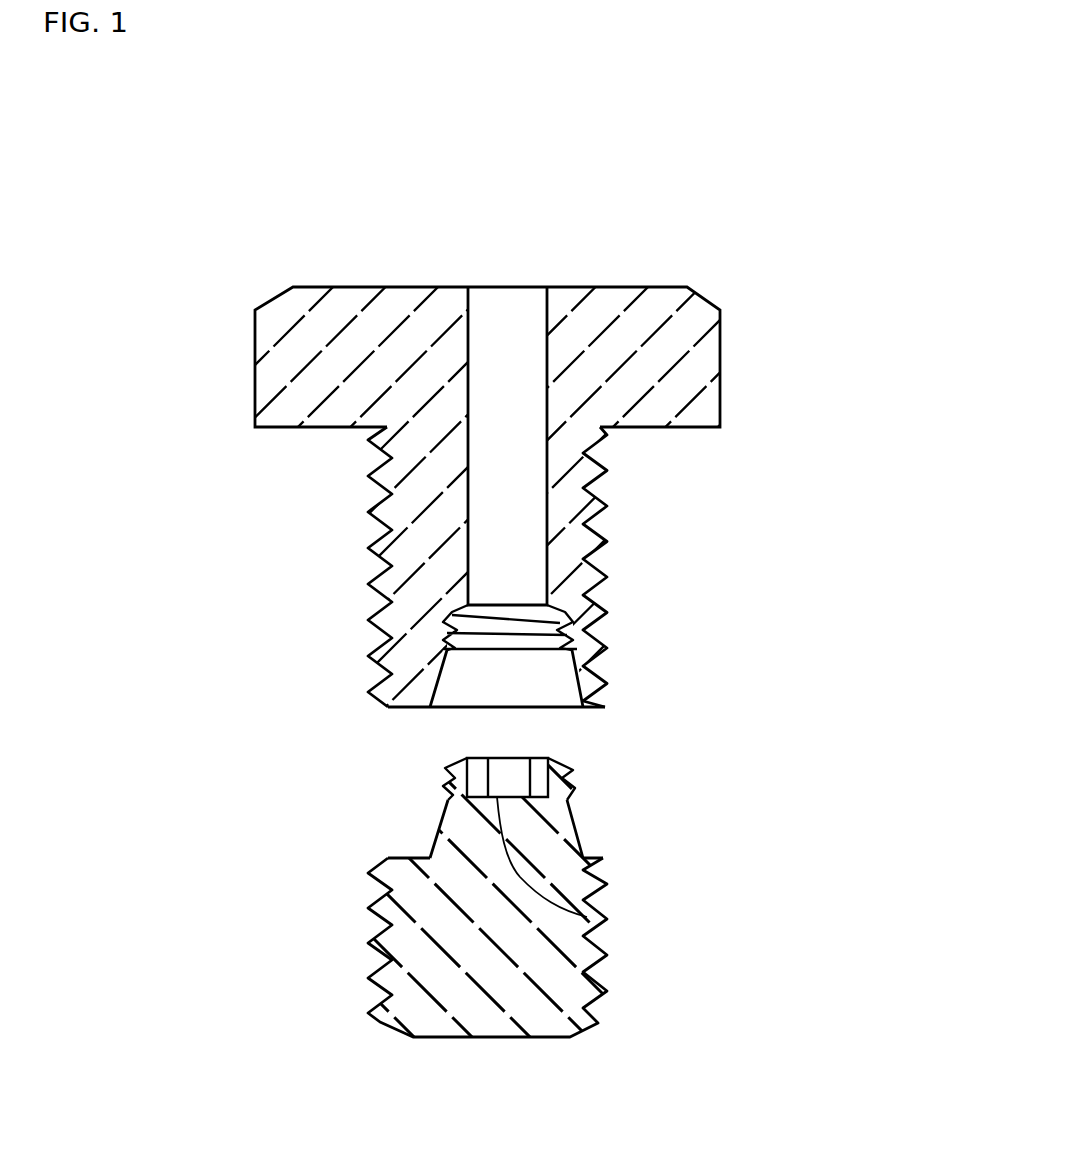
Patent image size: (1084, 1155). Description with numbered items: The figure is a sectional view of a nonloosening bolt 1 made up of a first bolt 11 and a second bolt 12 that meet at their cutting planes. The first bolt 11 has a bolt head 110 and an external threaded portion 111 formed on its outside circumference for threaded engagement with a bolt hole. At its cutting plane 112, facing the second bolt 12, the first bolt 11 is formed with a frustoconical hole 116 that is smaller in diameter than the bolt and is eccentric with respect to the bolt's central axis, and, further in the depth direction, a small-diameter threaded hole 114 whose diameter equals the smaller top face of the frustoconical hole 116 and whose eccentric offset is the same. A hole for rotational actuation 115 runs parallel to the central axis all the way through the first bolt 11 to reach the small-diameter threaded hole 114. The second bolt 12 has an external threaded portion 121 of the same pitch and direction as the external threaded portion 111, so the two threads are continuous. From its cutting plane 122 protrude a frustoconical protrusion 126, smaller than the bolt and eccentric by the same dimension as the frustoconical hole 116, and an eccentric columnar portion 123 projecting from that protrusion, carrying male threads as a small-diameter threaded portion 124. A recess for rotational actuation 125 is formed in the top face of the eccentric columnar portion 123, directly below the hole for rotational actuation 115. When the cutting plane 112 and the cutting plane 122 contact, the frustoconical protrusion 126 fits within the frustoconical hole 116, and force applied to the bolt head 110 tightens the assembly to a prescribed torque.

The nonloosening bolt 1 is at (380, 240).
The first bolt 11 is at (222, 277).
The bolt head 110 is at (255, 373).
The external threaded portion 111 is at (373, 622).
The cutting plane 112 is at (423, 717).
The small-diameter threaded hole 114 is at (493, 650).
The hole for rotational actuation 115 is at (712, 208).
The frustoconical hole 116 is at (477, 694).
The second bolt 12 is at (330, 953).
The external threaded portion 121 is at (372, 978).
The cutting plane 122 is at (430, 858).
The eccentric columnar portion 123 is at (530, 758).
The small-diameter threaded portion 124 is at (567, 777).
The recess for rotational actuation 125 is at (587, 917).
The frustoconical protrusion 126 is at (578, 828).